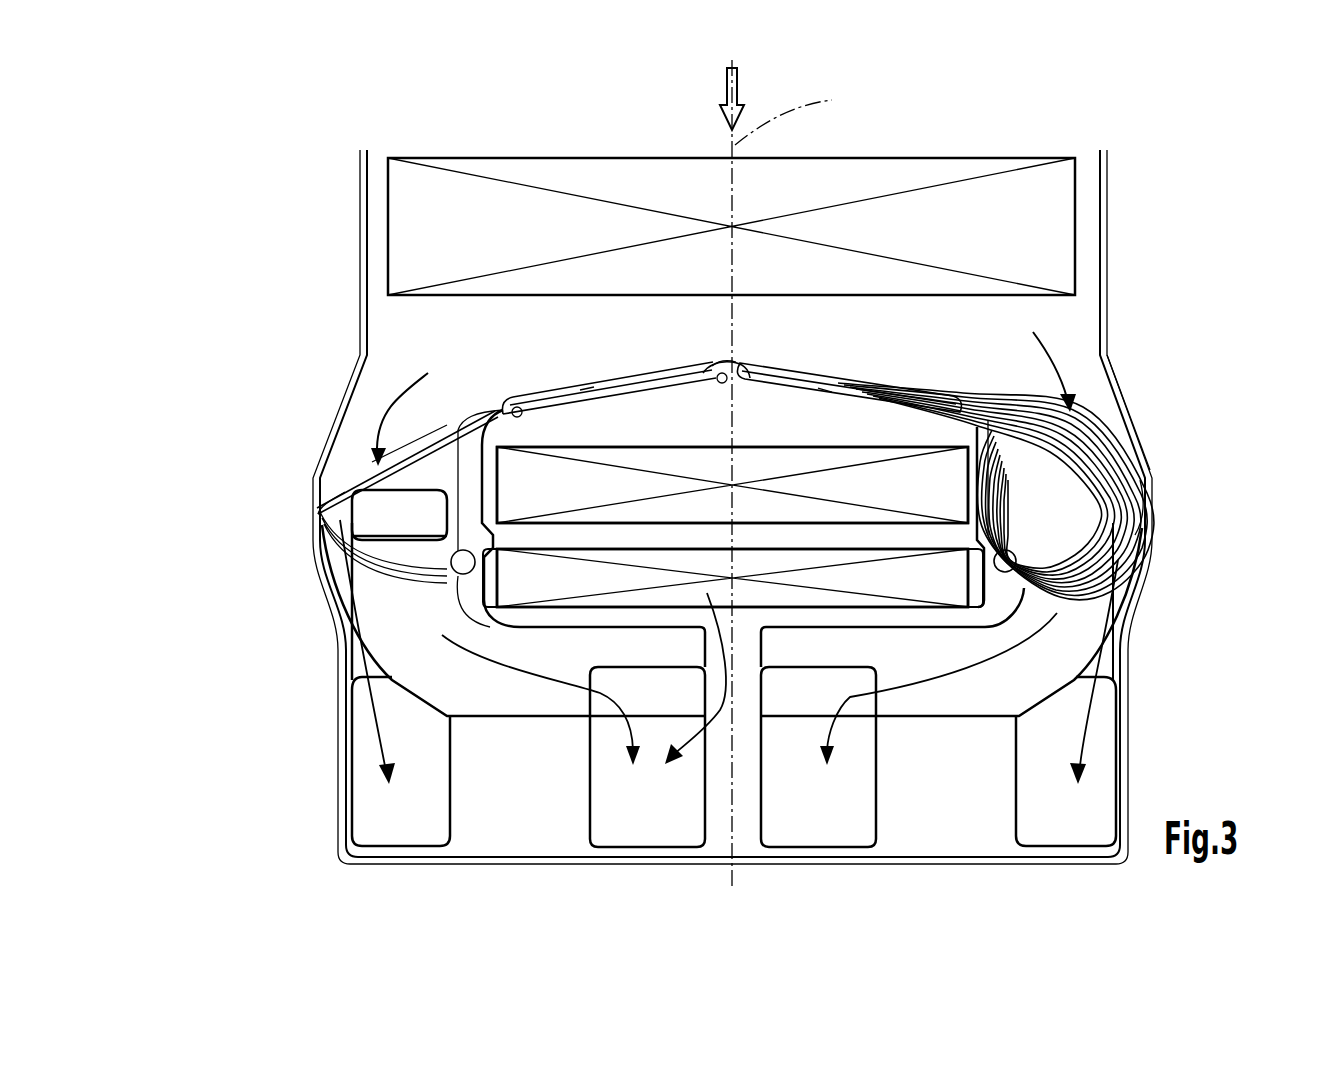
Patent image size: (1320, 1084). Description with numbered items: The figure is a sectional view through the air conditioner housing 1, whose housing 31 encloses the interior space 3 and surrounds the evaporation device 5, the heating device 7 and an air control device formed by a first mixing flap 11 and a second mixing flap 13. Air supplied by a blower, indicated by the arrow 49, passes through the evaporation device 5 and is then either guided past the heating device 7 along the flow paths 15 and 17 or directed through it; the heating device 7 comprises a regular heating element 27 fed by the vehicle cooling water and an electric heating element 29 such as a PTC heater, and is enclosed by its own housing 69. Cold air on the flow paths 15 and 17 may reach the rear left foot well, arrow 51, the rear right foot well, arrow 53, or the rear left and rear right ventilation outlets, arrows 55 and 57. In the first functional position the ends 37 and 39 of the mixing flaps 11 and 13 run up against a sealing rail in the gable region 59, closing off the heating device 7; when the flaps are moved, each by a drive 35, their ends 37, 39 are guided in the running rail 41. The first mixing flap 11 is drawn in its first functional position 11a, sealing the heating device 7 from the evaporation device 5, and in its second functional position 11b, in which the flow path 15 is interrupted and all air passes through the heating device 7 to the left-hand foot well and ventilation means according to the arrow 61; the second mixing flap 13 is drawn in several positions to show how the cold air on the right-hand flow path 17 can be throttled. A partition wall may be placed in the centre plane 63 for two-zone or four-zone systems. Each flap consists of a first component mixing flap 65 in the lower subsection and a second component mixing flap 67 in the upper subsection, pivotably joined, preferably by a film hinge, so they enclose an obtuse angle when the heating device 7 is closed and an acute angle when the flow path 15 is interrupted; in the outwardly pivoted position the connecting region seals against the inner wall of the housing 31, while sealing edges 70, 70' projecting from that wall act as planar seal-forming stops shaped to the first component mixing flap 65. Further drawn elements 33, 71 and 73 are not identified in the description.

The air conditioner housing 1 is at (233, 379).
The interior space 3 is at (1078, 328).
The evaporation device 5 is at (432, 254).
The heating device 7 is at (722, 442).
The first mixing flap 11 is at (343, 492).
The first functional position 11a is at (536, 378).
The second functional position 11b is at (372, 460).
The second mixing flap 13 is at (1128, 444).
The flow path 15 is at (397, 407).
The flow path 17 is at (1058, 358).
The regular heating element 27 is at (542, 505).
The electric heating element 29 is at (542, 592).
The housing 31 is at (1114, 385).
The pivot bearing 33 is at (450, 607).
The drive 35 is at (1068, 606).
The end of first mixing flap 37 is at (705, 368).
The end of second mixing flap 39 is at (767, 360).
The running rail 41 is at (587, 397).
The arrow 49 is at (742, 92).
The arrow 51 is at (367, 727).
The arrow 53 is at (1087, 729).
The arrow 55 is at (628, 723).
The arrow 57 is at (833, 727).
The gable region 59 is at (752, 338).
The arrow 61 is at (730, 733).
The centre plane 63 is at (795, 475).
The first component mixing flap 65 is at (327, 551).
The second component mixing flap 67 is at (420, 443).
The housing of the heating device 69 is at (372, 464).
The sealing edge 70 is at (468, 619).
The sealing edge 70' is at (1125, 543).
The stop 71 is at (406, 532).
The spring end 73 is at (1133, 500).